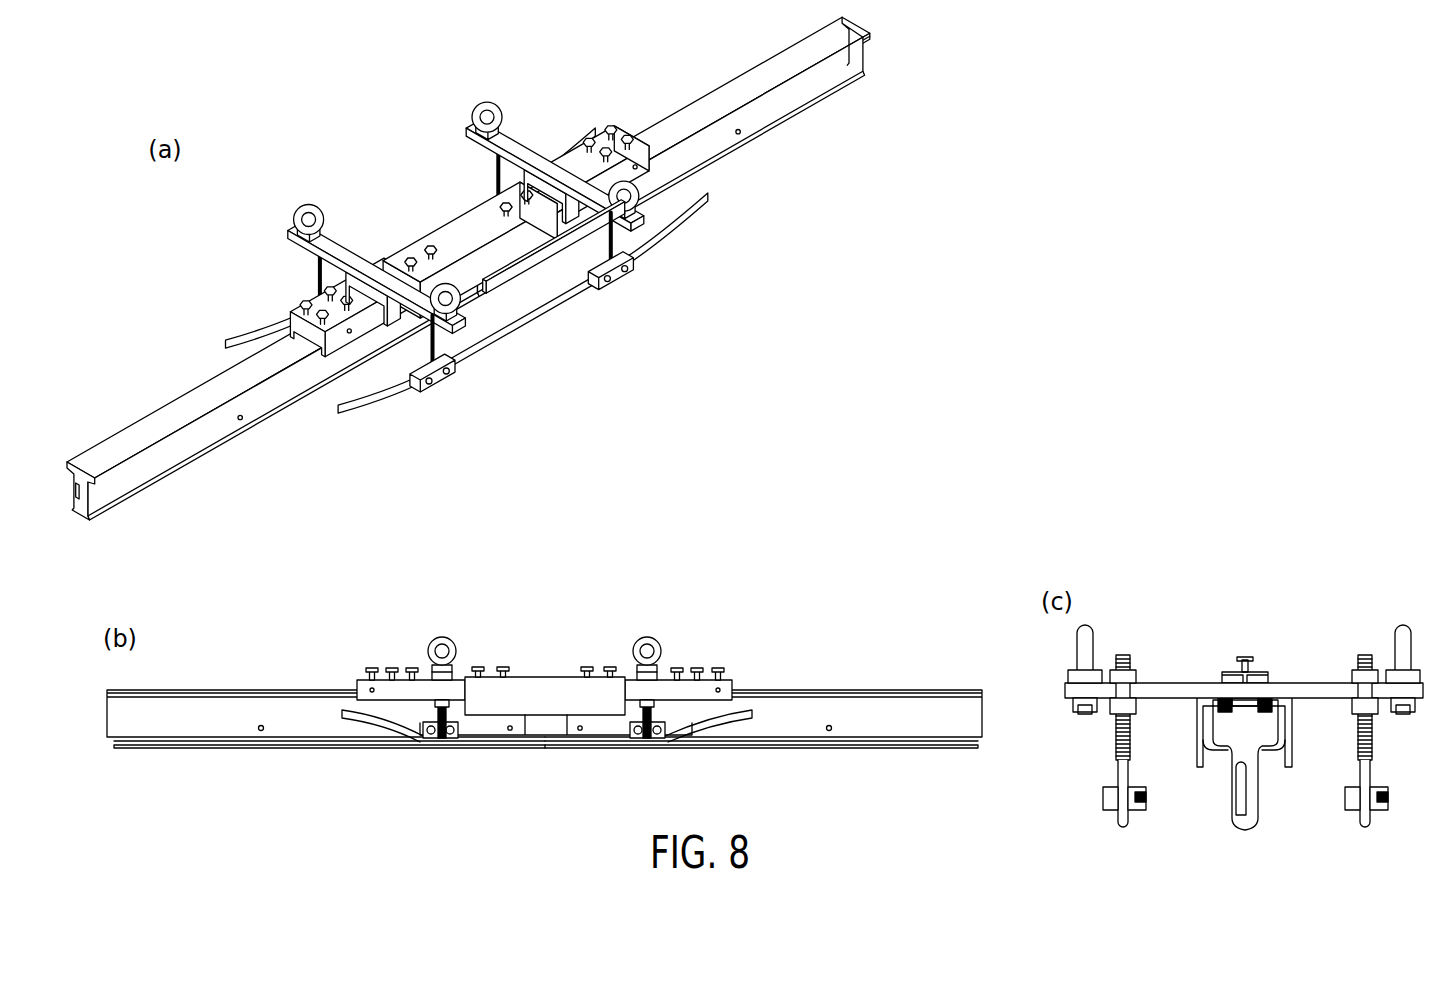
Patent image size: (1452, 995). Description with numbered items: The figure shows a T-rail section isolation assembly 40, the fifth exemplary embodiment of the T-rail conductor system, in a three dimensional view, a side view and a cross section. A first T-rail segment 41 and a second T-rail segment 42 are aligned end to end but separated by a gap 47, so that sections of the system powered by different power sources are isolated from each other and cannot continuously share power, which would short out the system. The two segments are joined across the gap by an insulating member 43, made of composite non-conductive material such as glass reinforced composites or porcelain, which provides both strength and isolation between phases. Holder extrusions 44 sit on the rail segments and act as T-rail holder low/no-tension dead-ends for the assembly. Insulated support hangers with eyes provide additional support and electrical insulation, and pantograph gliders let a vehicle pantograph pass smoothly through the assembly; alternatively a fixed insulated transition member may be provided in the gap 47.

The T-rail section isolation assembly 40 is at (414, 122).
The first T-rail segment 41 is at (134, 430).
The second T-rail segment 42 is at (760, 75).
The insulating member 43 is at (447, 230).
The holder extrusion 44 is at (290, 322).
The gap 47 is at (477, 303).